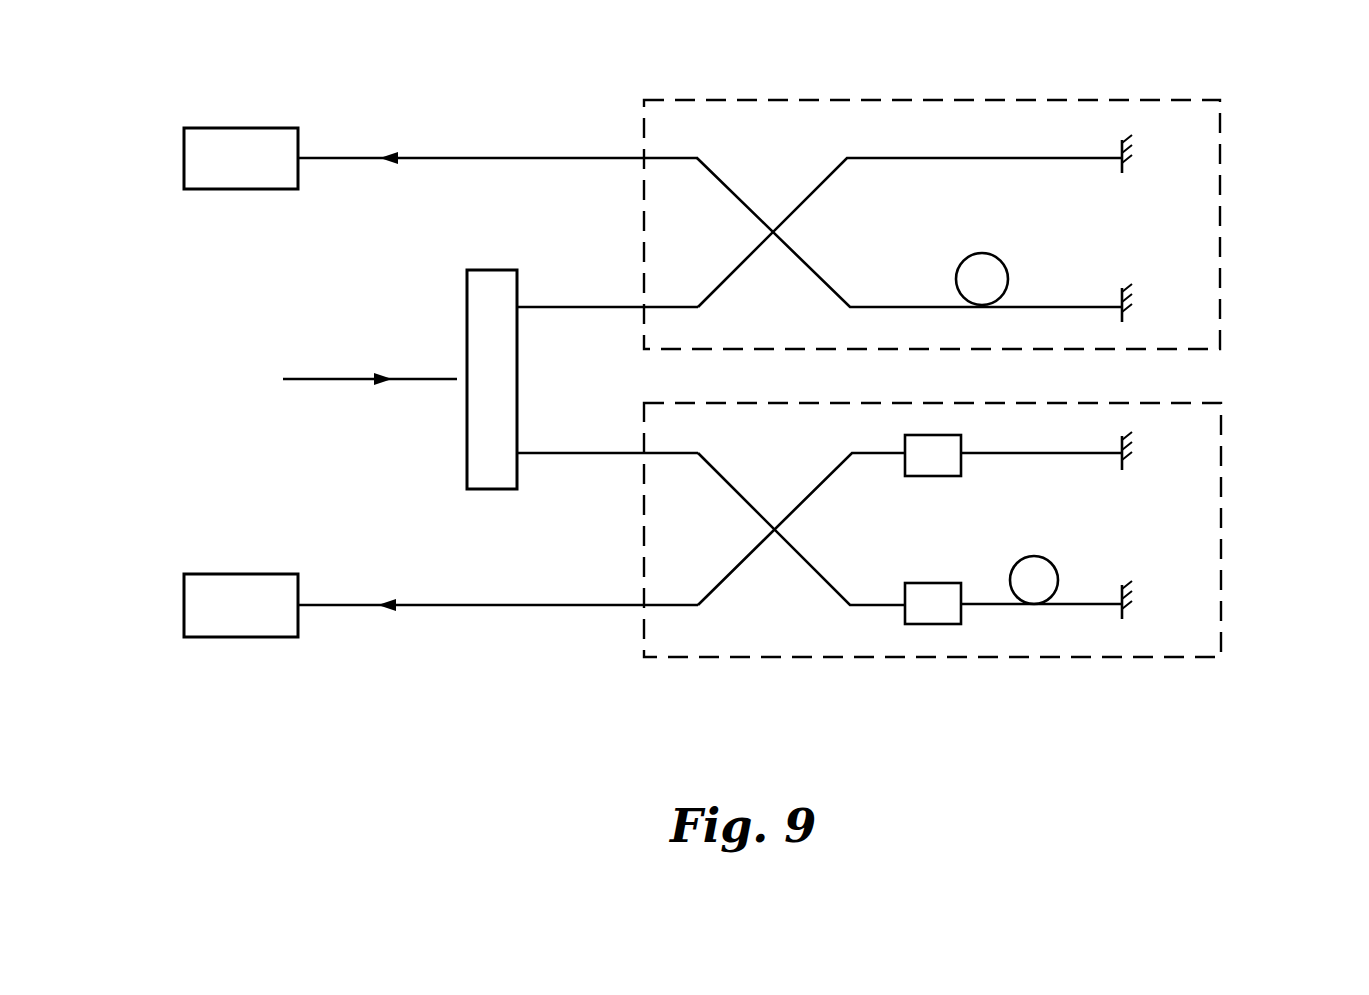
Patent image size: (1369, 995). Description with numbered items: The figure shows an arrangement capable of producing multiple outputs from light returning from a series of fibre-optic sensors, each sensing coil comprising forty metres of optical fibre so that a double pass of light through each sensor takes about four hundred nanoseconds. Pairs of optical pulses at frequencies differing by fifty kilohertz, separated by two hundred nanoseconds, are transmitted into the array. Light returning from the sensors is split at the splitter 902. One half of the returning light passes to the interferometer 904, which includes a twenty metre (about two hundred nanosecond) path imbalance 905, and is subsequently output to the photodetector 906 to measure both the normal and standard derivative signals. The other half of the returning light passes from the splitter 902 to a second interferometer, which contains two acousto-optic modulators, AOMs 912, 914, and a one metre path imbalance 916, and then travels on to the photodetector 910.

The splitter 902 is at (488, 443).
The interferometer 904 is at (1220, 130).
The path imbalance 905 is at (1008, 272).
The photodetector 906 is at (268, 127).
The photodetector 910 is at (247, 637).
The AOM 912 is at (905, 477).
The AOM 914 is at (925, 625).
The path imbalance 916 is at (1056, 592).